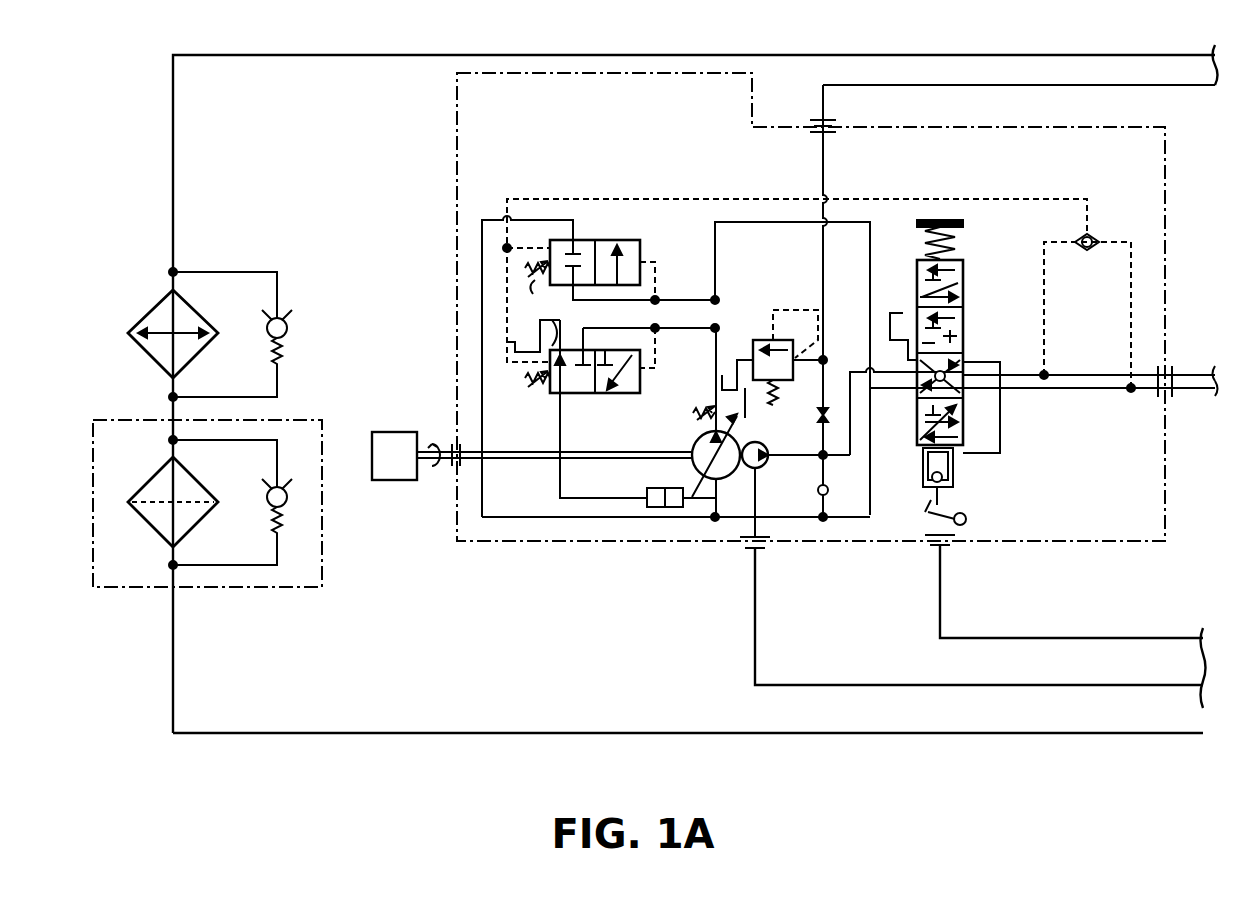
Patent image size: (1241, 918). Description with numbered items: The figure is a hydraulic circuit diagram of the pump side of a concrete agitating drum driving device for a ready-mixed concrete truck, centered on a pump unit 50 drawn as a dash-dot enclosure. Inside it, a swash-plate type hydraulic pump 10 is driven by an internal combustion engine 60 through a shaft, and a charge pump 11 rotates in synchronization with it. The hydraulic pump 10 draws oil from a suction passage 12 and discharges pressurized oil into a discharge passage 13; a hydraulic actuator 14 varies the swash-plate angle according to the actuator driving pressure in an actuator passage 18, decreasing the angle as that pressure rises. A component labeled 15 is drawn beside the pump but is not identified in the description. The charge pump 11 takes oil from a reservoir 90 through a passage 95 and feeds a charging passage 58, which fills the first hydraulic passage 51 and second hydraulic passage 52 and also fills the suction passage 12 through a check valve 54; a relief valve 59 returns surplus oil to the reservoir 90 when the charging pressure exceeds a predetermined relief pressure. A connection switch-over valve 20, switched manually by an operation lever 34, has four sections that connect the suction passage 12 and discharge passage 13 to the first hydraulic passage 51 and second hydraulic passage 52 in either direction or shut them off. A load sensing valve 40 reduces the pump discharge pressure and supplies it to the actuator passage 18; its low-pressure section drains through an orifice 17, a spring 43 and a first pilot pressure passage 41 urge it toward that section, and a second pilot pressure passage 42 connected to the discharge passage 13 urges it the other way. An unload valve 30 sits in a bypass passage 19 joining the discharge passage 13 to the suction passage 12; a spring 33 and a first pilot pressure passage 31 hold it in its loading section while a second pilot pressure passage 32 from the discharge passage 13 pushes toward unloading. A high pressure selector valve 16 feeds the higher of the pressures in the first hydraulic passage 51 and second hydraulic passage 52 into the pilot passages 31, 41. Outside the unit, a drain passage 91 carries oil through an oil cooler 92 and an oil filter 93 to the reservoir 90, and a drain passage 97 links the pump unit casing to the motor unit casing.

The hydraulic pump 10 is at (692, 441).
The charge pump 11 is at (765, 468).
The suction passage 12 is at (872, 480).
The discharge passage 13 is at (773, 222).
The hydraulic actuator 14 is at (655, 508).
The spring 15 is at (695, 408).
The high pressure selector valve 16 is at (1095, 238).
The orifice 17 is at (574, 338).
The actuator passage 18 is at (577, 500).
The bypass passage 19 is at (482, 228).
The connection switch-over valve 20 is at (965, 262).
The unload valve 30 is at (643, 243).
The first pilot pressure passage 31 is at (537, 246).
The second pilot pressure passage 32 is at (658, 275).
The spring 33 is at (524, 299).
The operation lever 34 is at (966, 512).
The load sensing valve 40 is at (552, 394).
The first pilot pressure passage 41 is at (525, 274).
The second pilot pressure passage 42 is at (658, 368).
The spring 43 is at (531, 382).
The pump unit 50 is at (485, 543).
The first hydraulic passage 51 is at (1192, 372).
The second hydraulic passage 52 is at (1192, 392).
The check valve 54 is at (830, 492).
The charging passage 58 is at (823, 100).
The relief valve 59 is at (767, 338).
The internal combustion engine 60 is at (385, 482).
The reservoir 90 is at (507, 346).
The drain passage 91 is at (175, 665).
The oil cooler 92 is at (161, 304).
The oil filter 93 is at (152, 518).
The passage 95 is at (880, 685).
The drain passage 97 is at (986, 638).